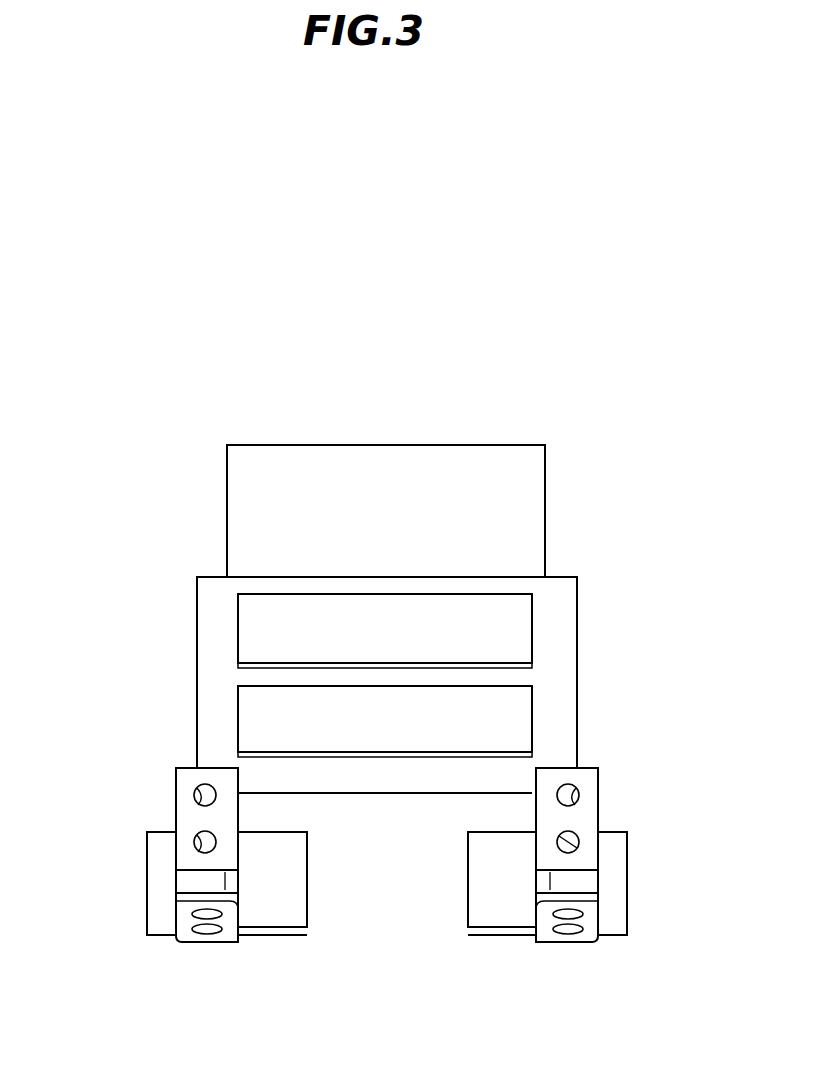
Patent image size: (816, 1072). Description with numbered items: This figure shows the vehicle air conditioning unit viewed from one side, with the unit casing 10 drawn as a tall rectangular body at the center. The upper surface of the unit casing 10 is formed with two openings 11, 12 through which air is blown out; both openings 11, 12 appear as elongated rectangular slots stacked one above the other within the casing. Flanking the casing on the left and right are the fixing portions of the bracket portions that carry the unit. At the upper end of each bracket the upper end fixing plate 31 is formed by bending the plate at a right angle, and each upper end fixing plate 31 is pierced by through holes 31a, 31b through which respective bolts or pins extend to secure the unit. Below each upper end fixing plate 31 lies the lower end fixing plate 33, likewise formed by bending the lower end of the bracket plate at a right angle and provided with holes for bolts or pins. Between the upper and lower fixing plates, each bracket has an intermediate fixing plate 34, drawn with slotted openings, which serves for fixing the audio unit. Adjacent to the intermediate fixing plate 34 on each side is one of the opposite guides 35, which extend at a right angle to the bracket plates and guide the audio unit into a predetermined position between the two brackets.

The unit casing 10 is at (584, 592).
The opening 11 is at (238, 622).
The opening 12 is at (238, 703).
The upper end fixing plate 31 is at (176, 782).
The through hole 31a is at (200, 848).
The through hole 31b is at (200, 805).
The lower end fixing plate 33 is at (158, 938).
The intermediate fixing plate 34 is at (192, 945).
The guide 35 is at (273, 940).